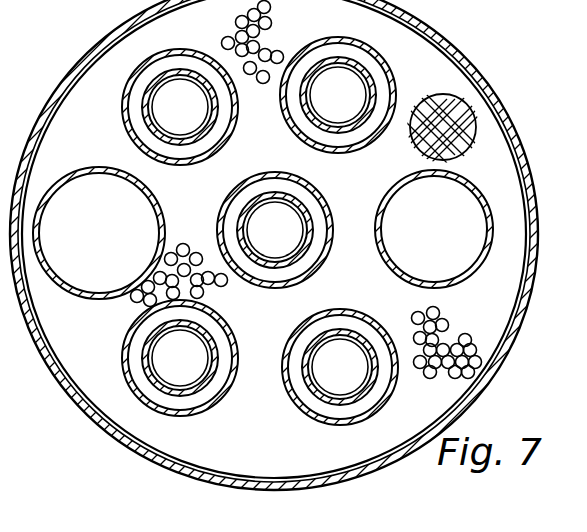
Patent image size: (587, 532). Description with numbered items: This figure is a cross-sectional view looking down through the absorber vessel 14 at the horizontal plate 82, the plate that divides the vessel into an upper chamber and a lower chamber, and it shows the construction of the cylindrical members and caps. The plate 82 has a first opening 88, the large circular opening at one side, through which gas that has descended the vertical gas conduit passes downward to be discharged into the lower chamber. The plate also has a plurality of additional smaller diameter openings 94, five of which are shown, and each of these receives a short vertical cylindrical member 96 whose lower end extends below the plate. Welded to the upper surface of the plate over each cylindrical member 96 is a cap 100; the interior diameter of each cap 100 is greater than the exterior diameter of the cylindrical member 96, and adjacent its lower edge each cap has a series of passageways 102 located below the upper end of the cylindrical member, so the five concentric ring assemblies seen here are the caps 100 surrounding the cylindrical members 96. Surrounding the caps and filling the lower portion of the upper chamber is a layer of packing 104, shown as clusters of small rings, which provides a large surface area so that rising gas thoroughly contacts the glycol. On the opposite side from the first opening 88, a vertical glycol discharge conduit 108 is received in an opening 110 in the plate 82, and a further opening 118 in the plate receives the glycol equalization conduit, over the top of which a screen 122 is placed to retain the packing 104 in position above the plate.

The absorber vessel 14 is at (100, 420).
The horizontal plate 82 is at (413, 55).
The first opening 88 is at (66, 284).
The smaller diameter openings 94 is at (208, 117).
The vertical cylindrical member 96 is at (204, 133).
The cap 100 is at (124, 87).
The passageways 102 is at (182, 50).
The packing 104 is at (430, 376).
The glycol discharge conduit 108 is at (458, 280).
The opening 110 is at (445, 236).
The opening 118 is at (474, 116).
The screen 122 is at (462, 102).